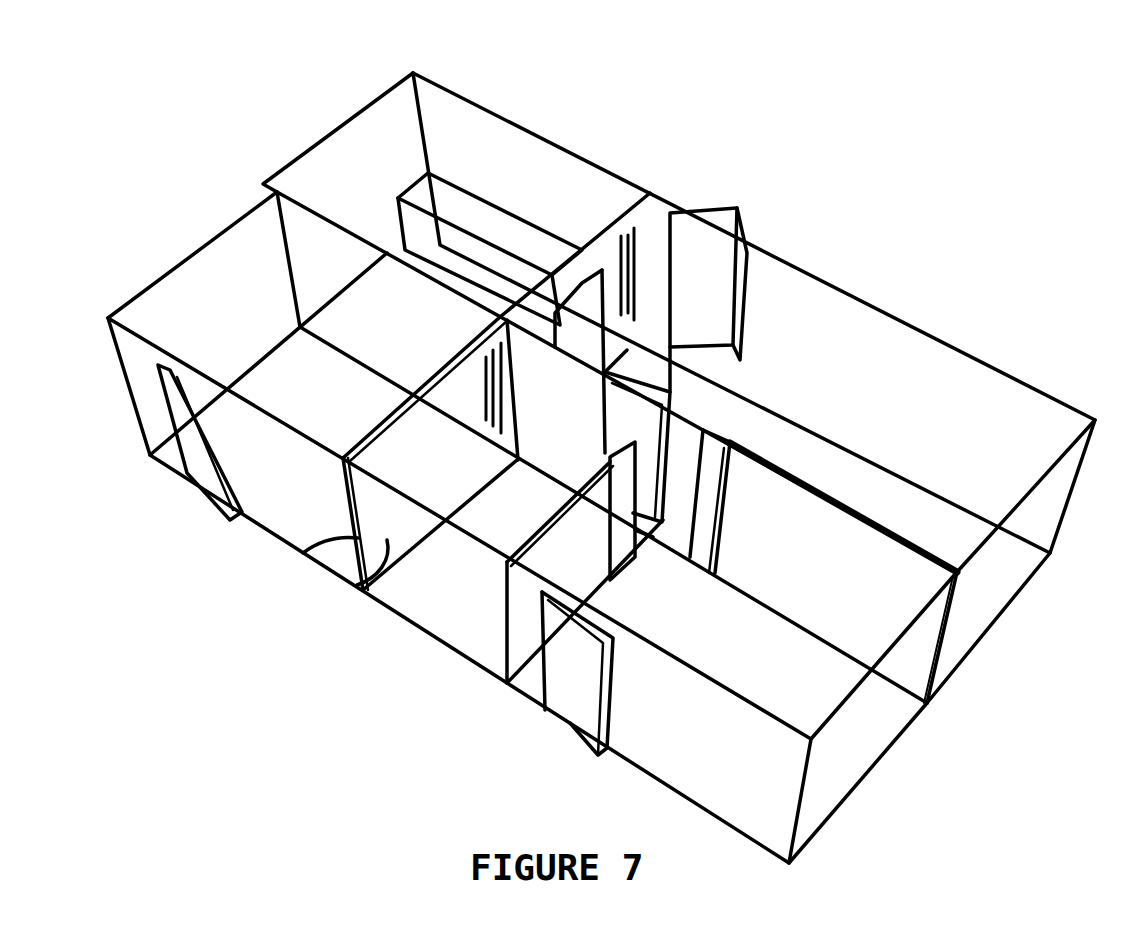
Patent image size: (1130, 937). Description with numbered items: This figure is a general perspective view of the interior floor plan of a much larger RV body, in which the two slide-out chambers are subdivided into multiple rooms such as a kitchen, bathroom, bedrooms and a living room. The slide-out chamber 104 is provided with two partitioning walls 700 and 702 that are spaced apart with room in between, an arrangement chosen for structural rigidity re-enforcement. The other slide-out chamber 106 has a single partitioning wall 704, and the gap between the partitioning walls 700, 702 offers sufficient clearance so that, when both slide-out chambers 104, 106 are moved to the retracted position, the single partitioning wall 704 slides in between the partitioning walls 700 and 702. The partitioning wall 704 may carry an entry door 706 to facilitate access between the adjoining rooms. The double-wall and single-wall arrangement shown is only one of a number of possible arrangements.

The slide-out chamber 104 is at (427, 650).
The slide-out chamber 106 is at (893, 302).
The partitioning wall 700 is at (303, 553).
The partitioning wall 702 is at (352, 580).
The partitioning wall 704 is at (637, 227).
The entry door 706 is at (582, 317).